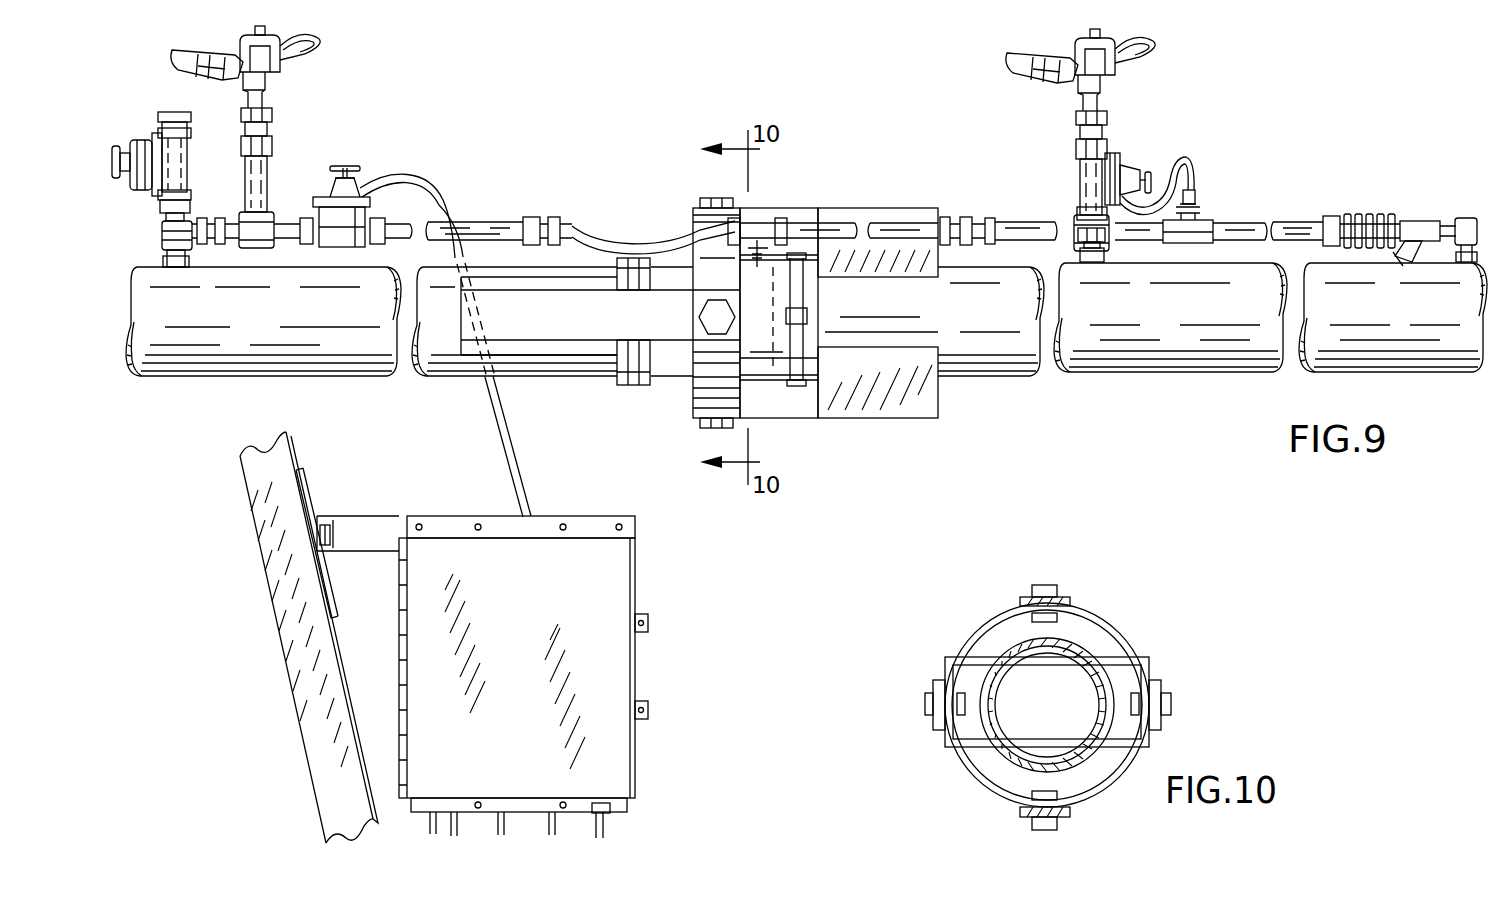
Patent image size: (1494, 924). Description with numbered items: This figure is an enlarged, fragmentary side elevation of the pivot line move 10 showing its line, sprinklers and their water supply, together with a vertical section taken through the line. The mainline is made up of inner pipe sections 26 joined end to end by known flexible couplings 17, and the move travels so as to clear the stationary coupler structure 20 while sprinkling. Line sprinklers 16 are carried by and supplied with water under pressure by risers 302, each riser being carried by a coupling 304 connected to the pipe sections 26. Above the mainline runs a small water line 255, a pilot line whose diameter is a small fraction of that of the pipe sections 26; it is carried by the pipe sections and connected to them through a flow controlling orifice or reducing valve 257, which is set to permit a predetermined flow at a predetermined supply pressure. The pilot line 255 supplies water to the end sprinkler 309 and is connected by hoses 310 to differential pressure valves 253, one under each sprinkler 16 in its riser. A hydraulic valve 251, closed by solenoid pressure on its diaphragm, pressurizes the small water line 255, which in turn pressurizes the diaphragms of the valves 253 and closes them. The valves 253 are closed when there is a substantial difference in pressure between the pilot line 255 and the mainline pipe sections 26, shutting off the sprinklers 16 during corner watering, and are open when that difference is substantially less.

In FIG. 9, the pivot line move 10 is at (1100, 400).
In FIG. 10, the pivot line move 10 is at (1117, 617).
In FIG. 9, the line sprinkler 16 is at (1058, 92).
In FIG. 9, the flexible coupling 17 is at (667, 395).
In FIG. 10, the flexible coupling 17 is at (1133, 636).
In FIG. 9, the stationary coupler structure 20 is at (341, 378).
In FIG. 9, the inner pipe section 26 is at (202, 380).
In FIG. 9, the hydraulic valve 251 is at (332, 197).
In FIG. 9, the differential pressure valve 253 is at (1127, 176).
In FIG. 9, the small water line 255 is at (1287, 225).
In FIG. 9, the reducing valve 257 is at (1380, 225).
In FIG. 9, the riser 302 is at (1103, 246).
In FIG. 9, the coupling 304 is at (1079, 234).
In FIG. 9, the end sprinkler 309 is at (278, 75).
In FIG. 9, the hose 310 is at (1191, 167).